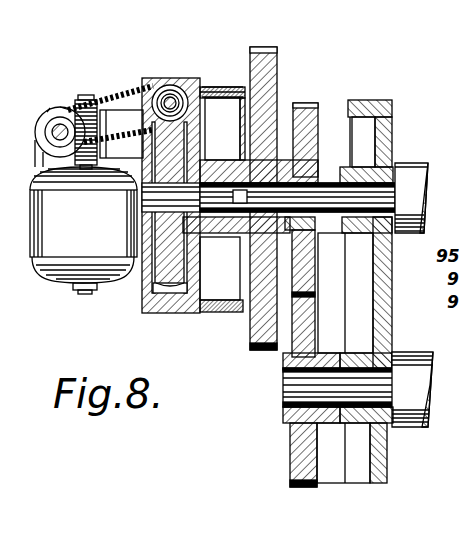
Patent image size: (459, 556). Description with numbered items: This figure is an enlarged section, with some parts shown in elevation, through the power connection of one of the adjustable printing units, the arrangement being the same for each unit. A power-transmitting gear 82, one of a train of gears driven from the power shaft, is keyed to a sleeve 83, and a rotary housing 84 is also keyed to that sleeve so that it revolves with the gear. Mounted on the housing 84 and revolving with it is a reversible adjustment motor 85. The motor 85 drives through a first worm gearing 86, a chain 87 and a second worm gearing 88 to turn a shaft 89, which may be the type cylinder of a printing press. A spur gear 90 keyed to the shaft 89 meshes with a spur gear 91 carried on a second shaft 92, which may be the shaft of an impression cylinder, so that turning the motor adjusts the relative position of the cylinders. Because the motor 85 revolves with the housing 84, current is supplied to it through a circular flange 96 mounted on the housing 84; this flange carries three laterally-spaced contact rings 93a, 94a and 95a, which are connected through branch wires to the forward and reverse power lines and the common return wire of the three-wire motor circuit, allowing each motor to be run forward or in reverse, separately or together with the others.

The power-transmitting gear 82 is at (262, 55).
The sleeve 83 is at (260, 173).
The rotary housing 84 is at (173, 80).
The motor 85 is at (60, 247).
The worm gearing 86 is at (73, 110).
The chain 87 is at (121, 98).
The worm gearing 88 is at (167, 87).
The shaft 89 is at (372, 192).
The spur gear 90 is at (307, 110).
The spur gear 91 is at (297, 488).
The shaft 92 is at (285, 398).
The contact ring 93a is at (207, 86).
The contact ring 94a is at (215, 87).
The contact ring 95a is at (232, 87).
The circular flange 96 is at (222, 313).